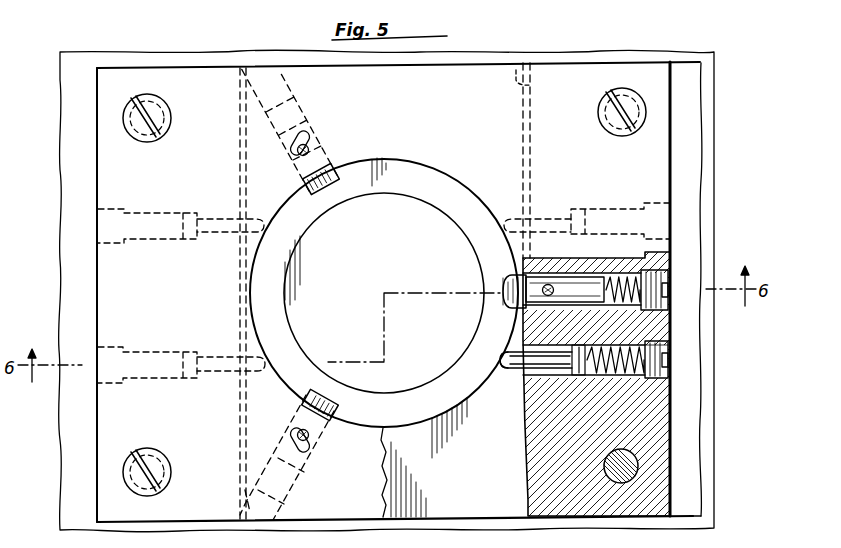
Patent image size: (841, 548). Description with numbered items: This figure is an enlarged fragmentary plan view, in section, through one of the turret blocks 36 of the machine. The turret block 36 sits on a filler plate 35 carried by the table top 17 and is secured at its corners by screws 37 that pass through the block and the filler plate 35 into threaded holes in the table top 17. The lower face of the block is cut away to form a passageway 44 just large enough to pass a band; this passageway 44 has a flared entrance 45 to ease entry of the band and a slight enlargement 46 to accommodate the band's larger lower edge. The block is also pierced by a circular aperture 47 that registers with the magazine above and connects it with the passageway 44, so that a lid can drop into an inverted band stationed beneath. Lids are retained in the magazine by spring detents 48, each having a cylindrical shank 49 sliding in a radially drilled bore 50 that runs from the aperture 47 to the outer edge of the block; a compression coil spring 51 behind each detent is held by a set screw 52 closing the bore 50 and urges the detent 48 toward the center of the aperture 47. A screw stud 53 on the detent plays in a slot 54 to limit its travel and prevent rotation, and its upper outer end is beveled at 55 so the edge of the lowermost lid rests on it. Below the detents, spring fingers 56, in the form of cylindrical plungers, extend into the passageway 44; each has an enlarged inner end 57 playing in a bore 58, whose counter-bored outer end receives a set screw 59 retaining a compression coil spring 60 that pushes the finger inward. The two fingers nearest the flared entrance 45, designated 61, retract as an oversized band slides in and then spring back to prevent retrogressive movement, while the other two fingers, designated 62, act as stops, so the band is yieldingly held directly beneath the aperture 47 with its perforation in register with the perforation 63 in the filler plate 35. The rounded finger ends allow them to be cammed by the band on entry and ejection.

The table top 17 is at (63, 222).
The filler plate 35 is at (690, 474).
The turret block 36 is at (661, 136).
The screws 37 is at (614, 100).
The passageway 44 is at (523, 428).
The flared entrance 45 is at (528, 510).
The enlargement 46 is at (518, 68).
The circular aperture 47 is at (418, 165).
The spring detents 48 is at (326, 194).
The cylindrical shank 49 is at (559, 288).
The bore 50 is at (615, 278).
The compression coil spring 51 is at (637, 274).
The set screw 52 is at (660, 281).
The screw stud 53 is at (312, 150).
The slot 54 is at (298, 137).
The beveled end 55 is at (506, 287).
The spring fingers 56 is at (207, 212).
The enlarged inner end 57 is at (580, 378).
The bore 58 is at (656, 379).
The set screw 59 is at (649, 362).
The compression coil spring 60 is at (655, 347).
The spring fingers nearest flared entrance 61 is at (507, 369).
The stop spring fingers 62 is at (255, 217).
The perforation 63 is at (432, 208).